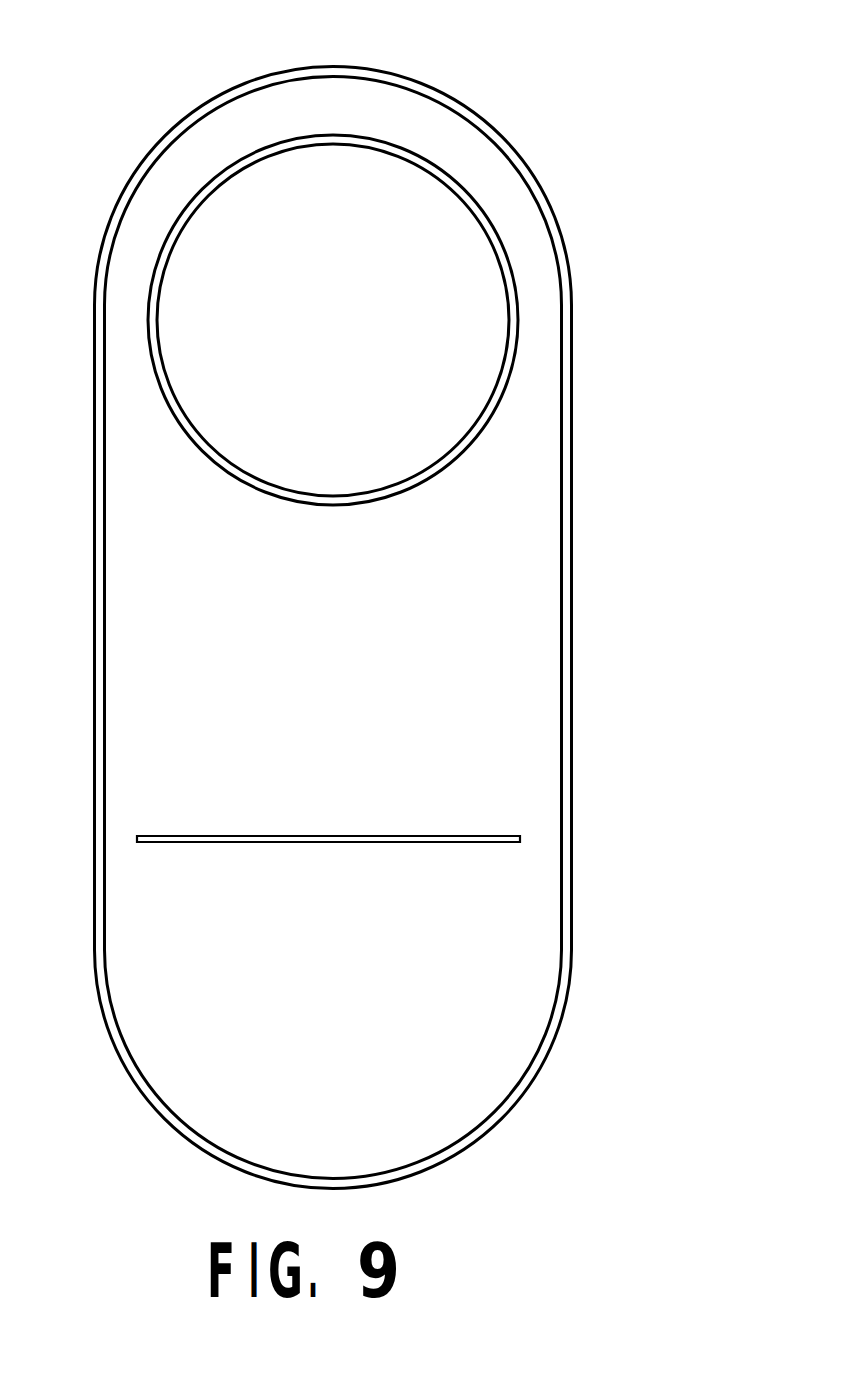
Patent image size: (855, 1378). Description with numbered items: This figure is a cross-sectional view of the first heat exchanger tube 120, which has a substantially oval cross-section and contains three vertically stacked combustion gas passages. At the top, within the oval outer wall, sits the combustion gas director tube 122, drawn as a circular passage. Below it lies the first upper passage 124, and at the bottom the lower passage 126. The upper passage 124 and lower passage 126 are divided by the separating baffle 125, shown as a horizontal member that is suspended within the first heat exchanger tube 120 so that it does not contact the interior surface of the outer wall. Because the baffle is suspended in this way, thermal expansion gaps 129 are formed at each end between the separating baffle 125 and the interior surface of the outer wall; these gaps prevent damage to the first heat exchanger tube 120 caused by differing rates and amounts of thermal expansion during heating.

The first heat exchanger tube 120 is at (515, 134).
The combustion gas director tube 122 is at (182, 417).
The first upper passage 124 is at (370, 635).
The separating baffle 125 is at (353, 836).
The lower passage 126 is at (357, 1073).
The thermal expansion gaps 129 is at (126, 805).